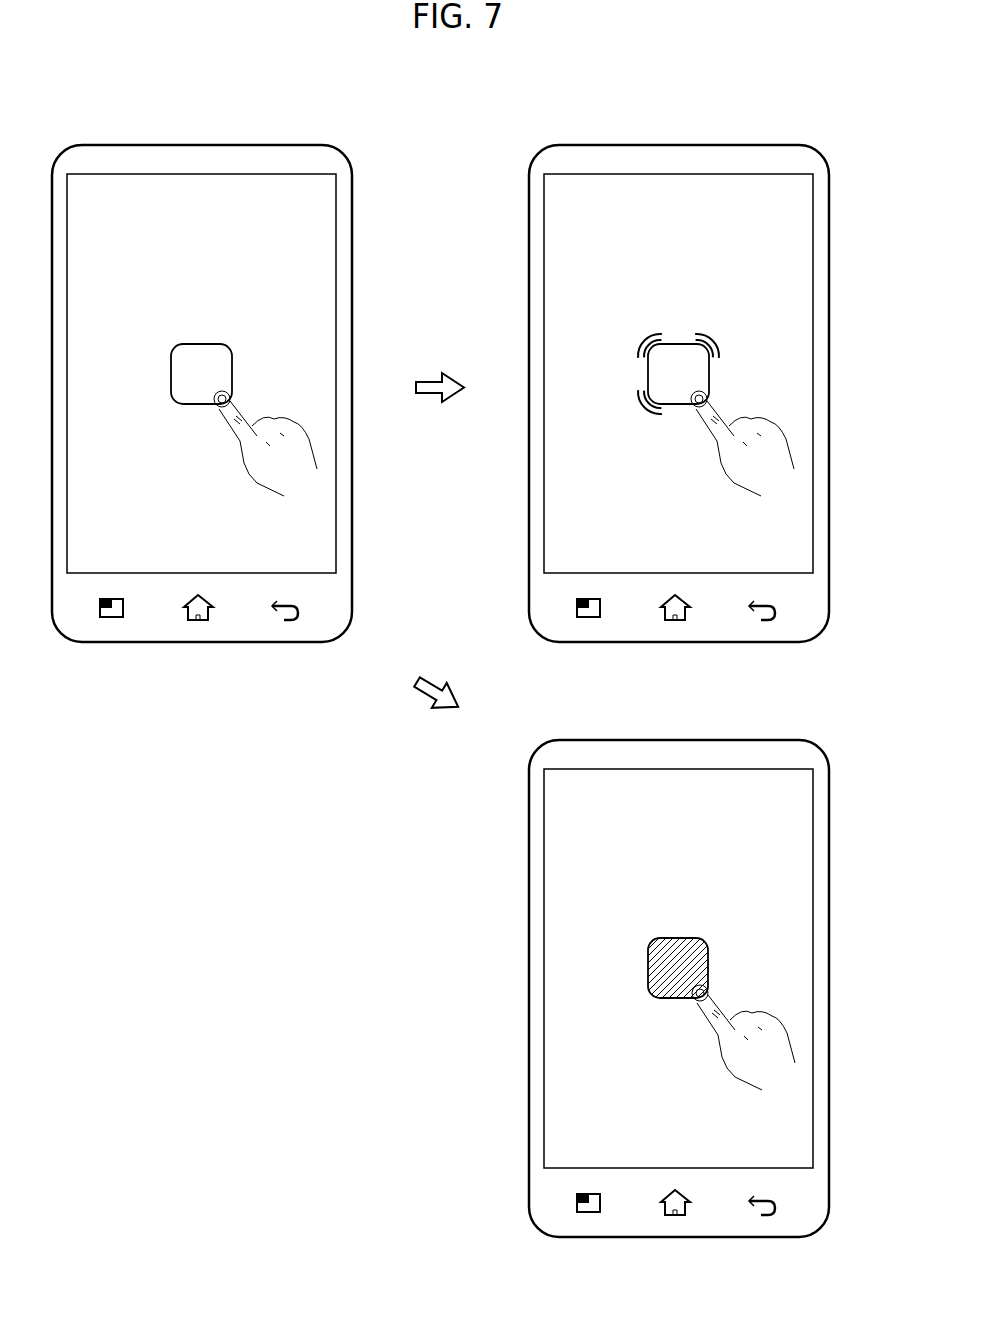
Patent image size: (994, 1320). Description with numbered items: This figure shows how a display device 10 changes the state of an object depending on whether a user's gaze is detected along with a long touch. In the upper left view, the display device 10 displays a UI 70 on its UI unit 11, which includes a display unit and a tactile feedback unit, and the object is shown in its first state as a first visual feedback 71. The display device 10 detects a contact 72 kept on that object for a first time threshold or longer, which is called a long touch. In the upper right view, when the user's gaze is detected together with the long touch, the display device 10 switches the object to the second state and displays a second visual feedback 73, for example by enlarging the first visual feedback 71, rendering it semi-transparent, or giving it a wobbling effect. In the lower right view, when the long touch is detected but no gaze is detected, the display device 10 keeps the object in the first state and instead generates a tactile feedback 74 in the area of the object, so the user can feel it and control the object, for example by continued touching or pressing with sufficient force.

The display device 10 is at (352, 285).
The UI unit 11 is at (483, 671).
The UI 70 is at (294, 211).
The first visual feedback 71 is at (219, 356).
The contact 72 is at (293, 452).
The second visual feedback 73 is at (696, 357).
The tactile feedback 74 is at (696, 964).